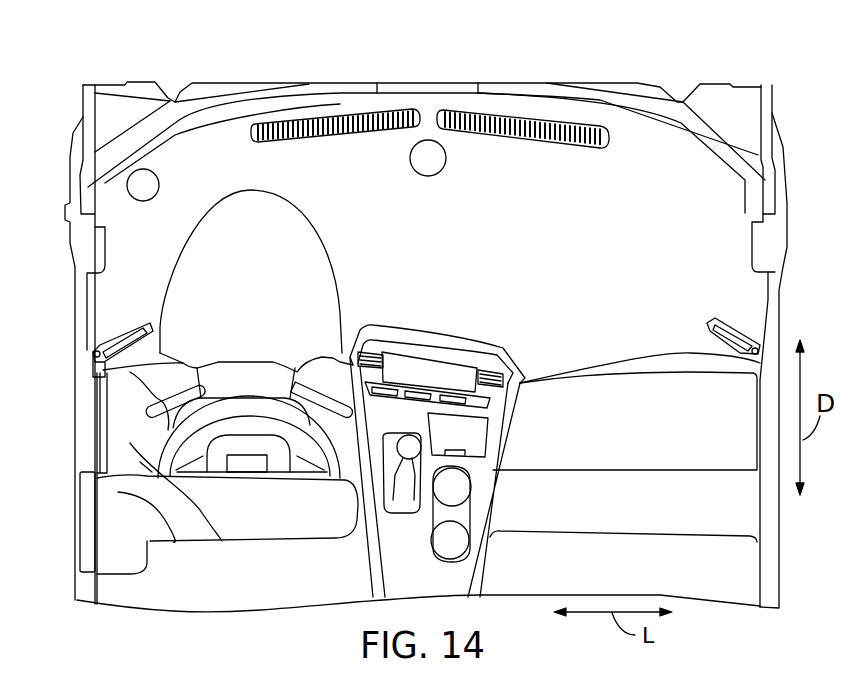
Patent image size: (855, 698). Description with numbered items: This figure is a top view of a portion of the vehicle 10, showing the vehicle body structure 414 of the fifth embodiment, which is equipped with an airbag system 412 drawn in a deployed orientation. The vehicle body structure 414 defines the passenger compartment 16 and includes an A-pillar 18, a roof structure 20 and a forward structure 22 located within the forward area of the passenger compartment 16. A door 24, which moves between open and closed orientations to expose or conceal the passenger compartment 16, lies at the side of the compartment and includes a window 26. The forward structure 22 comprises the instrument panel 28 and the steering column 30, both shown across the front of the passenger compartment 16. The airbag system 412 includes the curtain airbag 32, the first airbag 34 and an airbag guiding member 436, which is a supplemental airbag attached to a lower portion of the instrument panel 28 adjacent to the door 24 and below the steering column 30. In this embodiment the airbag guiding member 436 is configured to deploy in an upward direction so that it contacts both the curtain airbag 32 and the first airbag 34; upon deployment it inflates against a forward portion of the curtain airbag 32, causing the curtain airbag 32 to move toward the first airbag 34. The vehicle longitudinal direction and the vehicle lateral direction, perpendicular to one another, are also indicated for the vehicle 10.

The vehicle 10 is at (686, 55).
The passenger compartment 16 is at (650, 190).
The A-pillar 18 is at (88, 361).
The roof structure 20 is at (87, 590).
The forward structure 22 is at (330, 152).
The door 24 is at (75, 434).
The window 26 is at (78, 528).
The instrument panel 28 is at (550, 350).
The steering column 30 is at (235, 425).
The curtain airbag 32 is at (175, 541).
The first airbag 34 is at (270, 510).
The airbag system 412 is at (157, 568).
The vehicle body structure 414 is at (568, 82).
The airbag guiding member 436 is at (222, 541).